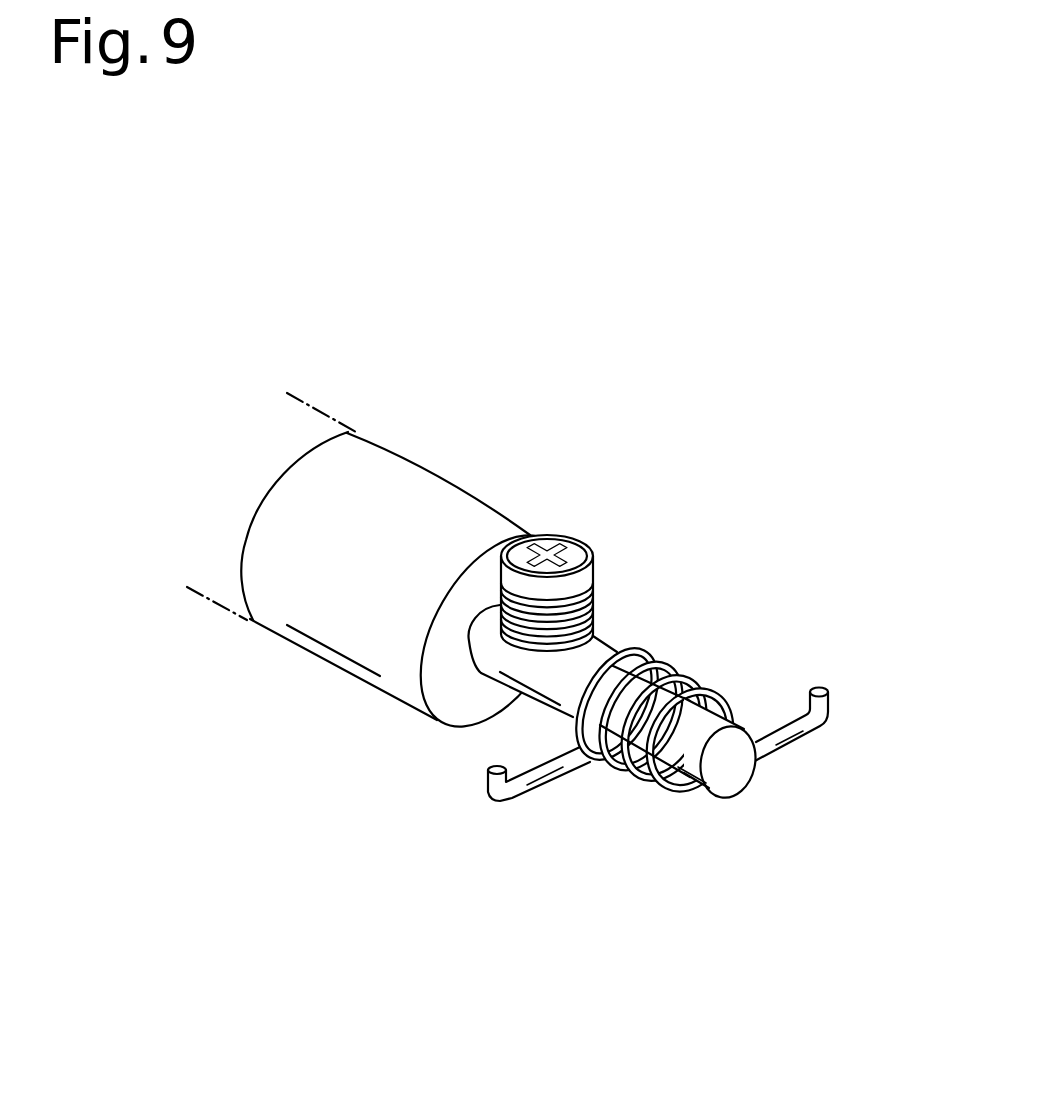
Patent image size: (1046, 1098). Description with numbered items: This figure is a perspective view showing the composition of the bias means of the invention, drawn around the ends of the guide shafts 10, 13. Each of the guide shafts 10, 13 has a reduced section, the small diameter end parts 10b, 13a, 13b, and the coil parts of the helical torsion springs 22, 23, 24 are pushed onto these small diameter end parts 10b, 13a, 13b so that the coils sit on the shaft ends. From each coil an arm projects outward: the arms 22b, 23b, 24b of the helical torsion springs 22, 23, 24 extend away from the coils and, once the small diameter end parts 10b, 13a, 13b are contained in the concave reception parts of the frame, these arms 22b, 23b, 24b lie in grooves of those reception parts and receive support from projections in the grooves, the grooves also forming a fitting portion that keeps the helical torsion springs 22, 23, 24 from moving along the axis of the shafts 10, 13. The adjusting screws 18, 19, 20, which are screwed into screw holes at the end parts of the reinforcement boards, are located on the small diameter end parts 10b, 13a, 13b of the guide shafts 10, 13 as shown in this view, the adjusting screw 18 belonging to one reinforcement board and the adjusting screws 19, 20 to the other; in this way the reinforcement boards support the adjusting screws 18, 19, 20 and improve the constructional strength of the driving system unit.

The guide shaft 10 is at (402, 572).
The guide shaft 13 is at (440, 502).
The adjusting screw 18 is at (605, 561).
The adjusting screw 19 is at (605, 561).
The adjusting screw 20 is at (587, 550).
The helical torsion spring 22 is at (673, 690).
The helical torsion spring 23 is at (673, 690).
The helical torsion spring 24 is at (673, 660).
The arm 22b is at (689, 805).
The arm 23b is at (689, 805).
The arm 24b is at (512, 802).
The small diameter end part 10b is at (718, 774).
The small diameter end part 13a is at (718, 774).
The small diameter end part 13b is at (722, 773).